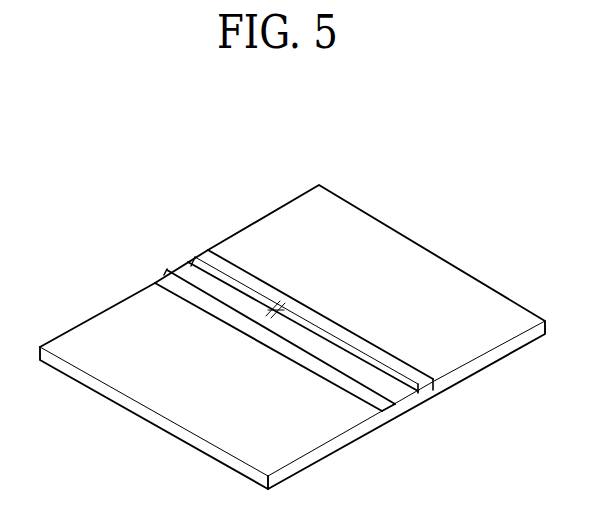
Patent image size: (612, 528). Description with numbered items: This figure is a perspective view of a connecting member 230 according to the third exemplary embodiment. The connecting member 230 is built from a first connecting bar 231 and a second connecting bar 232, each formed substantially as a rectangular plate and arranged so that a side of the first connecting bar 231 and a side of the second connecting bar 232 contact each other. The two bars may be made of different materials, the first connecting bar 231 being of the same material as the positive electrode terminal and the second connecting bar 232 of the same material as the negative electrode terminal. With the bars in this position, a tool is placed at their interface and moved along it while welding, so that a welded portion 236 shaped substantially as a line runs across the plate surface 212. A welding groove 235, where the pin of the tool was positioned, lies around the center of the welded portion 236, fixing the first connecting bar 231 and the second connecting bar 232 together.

The connecting member 230 is at (107, 301).
The support plate 212 is at (413, 258).
The first connecting bar 231 is at (310, 427).
The second connecting bar 232 is at (450, 347).
The welding groove 235 is at (190, 277).
The welded portion 236 is at (247, 278).